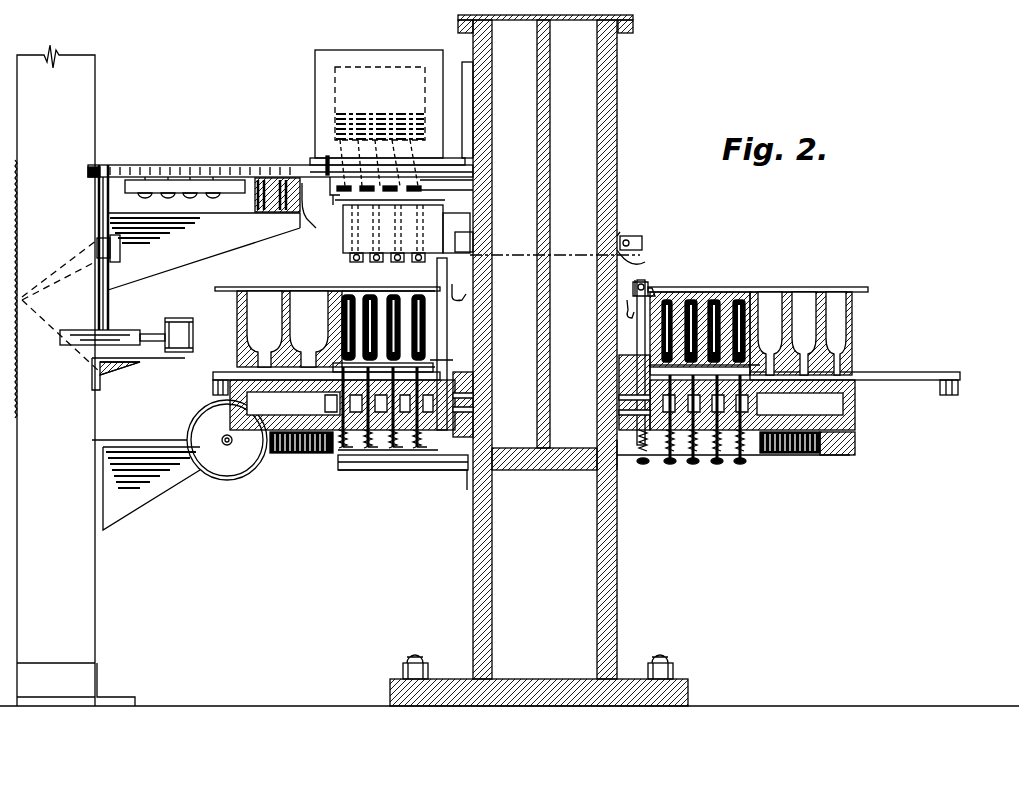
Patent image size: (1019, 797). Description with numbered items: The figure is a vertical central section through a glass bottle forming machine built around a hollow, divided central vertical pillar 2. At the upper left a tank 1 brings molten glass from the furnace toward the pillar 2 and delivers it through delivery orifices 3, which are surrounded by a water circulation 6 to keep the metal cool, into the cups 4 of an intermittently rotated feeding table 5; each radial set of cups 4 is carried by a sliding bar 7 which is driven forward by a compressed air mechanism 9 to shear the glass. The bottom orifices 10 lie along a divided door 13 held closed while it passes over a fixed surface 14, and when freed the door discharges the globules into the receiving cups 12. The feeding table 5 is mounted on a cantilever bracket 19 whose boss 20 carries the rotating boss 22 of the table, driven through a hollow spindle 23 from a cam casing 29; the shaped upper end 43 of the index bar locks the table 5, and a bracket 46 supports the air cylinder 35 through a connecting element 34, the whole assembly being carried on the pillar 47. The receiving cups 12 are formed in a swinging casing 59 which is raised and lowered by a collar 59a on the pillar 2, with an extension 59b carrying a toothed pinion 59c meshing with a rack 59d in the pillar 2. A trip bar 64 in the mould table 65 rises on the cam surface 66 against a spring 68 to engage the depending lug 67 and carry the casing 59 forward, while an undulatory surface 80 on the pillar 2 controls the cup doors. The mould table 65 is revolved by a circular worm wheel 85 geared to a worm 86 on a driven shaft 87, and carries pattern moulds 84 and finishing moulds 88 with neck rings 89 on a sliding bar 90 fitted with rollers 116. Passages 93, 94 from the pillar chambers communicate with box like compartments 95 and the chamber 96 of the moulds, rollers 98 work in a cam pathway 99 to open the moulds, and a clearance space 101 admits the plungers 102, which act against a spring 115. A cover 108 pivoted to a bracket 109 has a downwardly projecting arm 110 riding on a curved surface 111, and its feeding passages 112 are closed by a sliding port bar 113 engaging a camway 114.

The tank 1 is at (372, 72).
The central vertical pillar 2 is at (585, 95).
The delivery orifices 3 is at (335, 152).
The cups 4 is at (330, 186).
The feeding table 5 is at (200, 165).
The water circulation 6 is at (325, 160).
The sliding bar 7 is at (440, 162).
The compressed air mechanism 9 is at (300, 155).
The bottom orifices 10 is at (352, 192).
The receiving cups 12 is at (352, 236).
The divided door 13 is at (478, 182).
The fixed surface 14 is at (478, 192).
The cantilever bracket 19 is at (204, 251).
The boss 20 is at (256, 206).
The boss of the feeding table 22 is at (299, 214).
The hollow spindle 23 is at (102, 204).
The casing 29 is at (112, 332).
The rod 34 is at (155, 333).
The air cylinder 35 is at (180, 324).
The upper end of the index bar 43 is at (104, 167).
The bracket 46 is at (133, 364).
The pillar 47 is at (75, 375).
The swinging casing 59 is at (342, 250).
The collar 59a is at (492, 256).
The extension 59b is at (645, 245).
The toothed pinion 59c is at (622, 234).
The rack 59d is at (617, 212).
The trip bar 64 is at (437, 270).
The mould table 65 is at (282, 458).
The cam surface 66 is at (432, 486).
The depending lug 67 is at (456, 344).
The spring 68 is at (432, 458).
The undulatory surface 80 is at (478, 238).
The pattern moulds 84 is at (372, 294).
The circular worm wheel 85 is at (690, 298).
The worm 86 is at (227, 462).
The driven shaft 87 is at (229, 447).
The finishing moulds 88 is at (275, 300).
The neck rings 89 is at (430, 360).
The sliding bar 90 is at (245, 372).
The passage 93 is at (478, 393).
The passage 94 is at (478, 410).
The box like compartments 95 is at (542, 405).
The chamber 96 is at (530, 407).
The rollers 98 is at (618, 455).
The cam pathway 99 is at (600, 490).
The clearance space 101 is at (710, 368).
The plungers 102 is at (336, 442).
The cover 108 is at (248, 300).
The bracket 109 is at (670, 274).
The downwardly projecting arm 110 is at (640, 282).
The curved surface 111 is at (635, 317).
The feeding passages 112 is at (292, 290).
The sliding port bar 113 is at (742, 302).
The camway 114 is at (467, 303).
The spring 115 is at (745, 458).
The rollers 116 is at (213, 388).